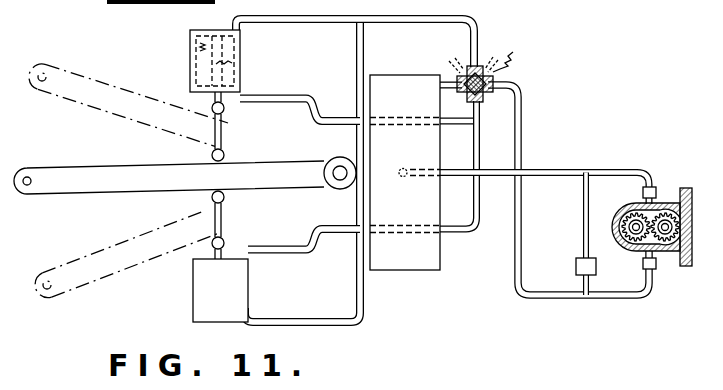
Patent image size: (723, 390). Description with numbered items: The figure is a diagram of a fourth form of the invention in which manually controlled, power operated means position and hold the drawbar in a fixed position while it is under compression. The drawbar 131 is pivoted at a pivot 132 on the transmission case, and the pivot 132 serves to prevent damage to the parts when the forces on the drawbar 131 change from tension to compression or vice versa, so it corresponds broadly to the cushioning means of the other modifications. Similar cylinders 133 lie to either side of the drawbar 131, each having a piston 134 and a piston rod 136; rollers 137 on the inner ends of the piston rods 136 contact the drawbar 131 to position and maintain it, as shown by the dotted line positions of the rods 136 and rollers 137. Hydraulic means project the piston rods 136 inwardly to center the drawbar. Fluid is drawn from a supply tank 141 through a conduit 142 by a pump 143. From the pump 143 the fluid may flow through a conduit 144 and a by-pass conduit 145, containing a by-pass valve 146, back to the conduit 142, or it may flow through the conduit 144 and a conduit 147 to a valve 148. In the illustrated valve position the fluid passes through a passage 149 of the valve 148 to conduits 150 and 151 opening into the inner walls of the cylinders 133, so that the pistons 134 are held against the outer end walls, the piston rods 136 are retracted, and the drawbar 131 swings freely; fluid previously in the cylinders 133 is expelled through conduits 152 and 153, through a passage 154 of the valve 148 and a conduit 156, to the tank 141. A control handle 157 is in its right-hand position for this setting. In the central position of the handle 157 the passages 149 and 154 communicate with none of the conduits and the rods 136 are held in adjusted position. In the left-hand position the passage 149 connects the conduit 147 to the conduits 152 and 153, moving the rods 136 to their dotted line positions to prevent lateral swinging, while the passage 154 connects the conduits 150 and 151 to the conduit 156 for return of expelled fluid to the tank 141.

The drawbar 131 is at (113, 190).
The pivot 132 is at (340, 172).
The cylinders 133 is at (191, 80).
The piston 134 is at (199, 47).
The piston rod 136 is at (233, 62).
The rollers 137 is at (224, 128).
The supply tank 141 is at (427, 271).
The conduit 142 is at (559, 169).
The pump 143 is at (668, 240).
The conduit 144 is at (605, 299).
The by-pass conduit 145 is at (584, 236).
The by-pass valve 146 is at (577, 268).
The conduit 147 is at (516, 262).
The valve 148 is at (560, 77).
The passage 149 is at (487, 94).
The conduit 150 is at (474, 166).
The conduit 151 is at (455, 118).
The conduit 152 is at (315, 16).
The conduit 153 is at (366, 322).
The passage 154 is at (470, 55).
The conduit 156 is at (441, 80).
The control handle 157 is at (513, 52).